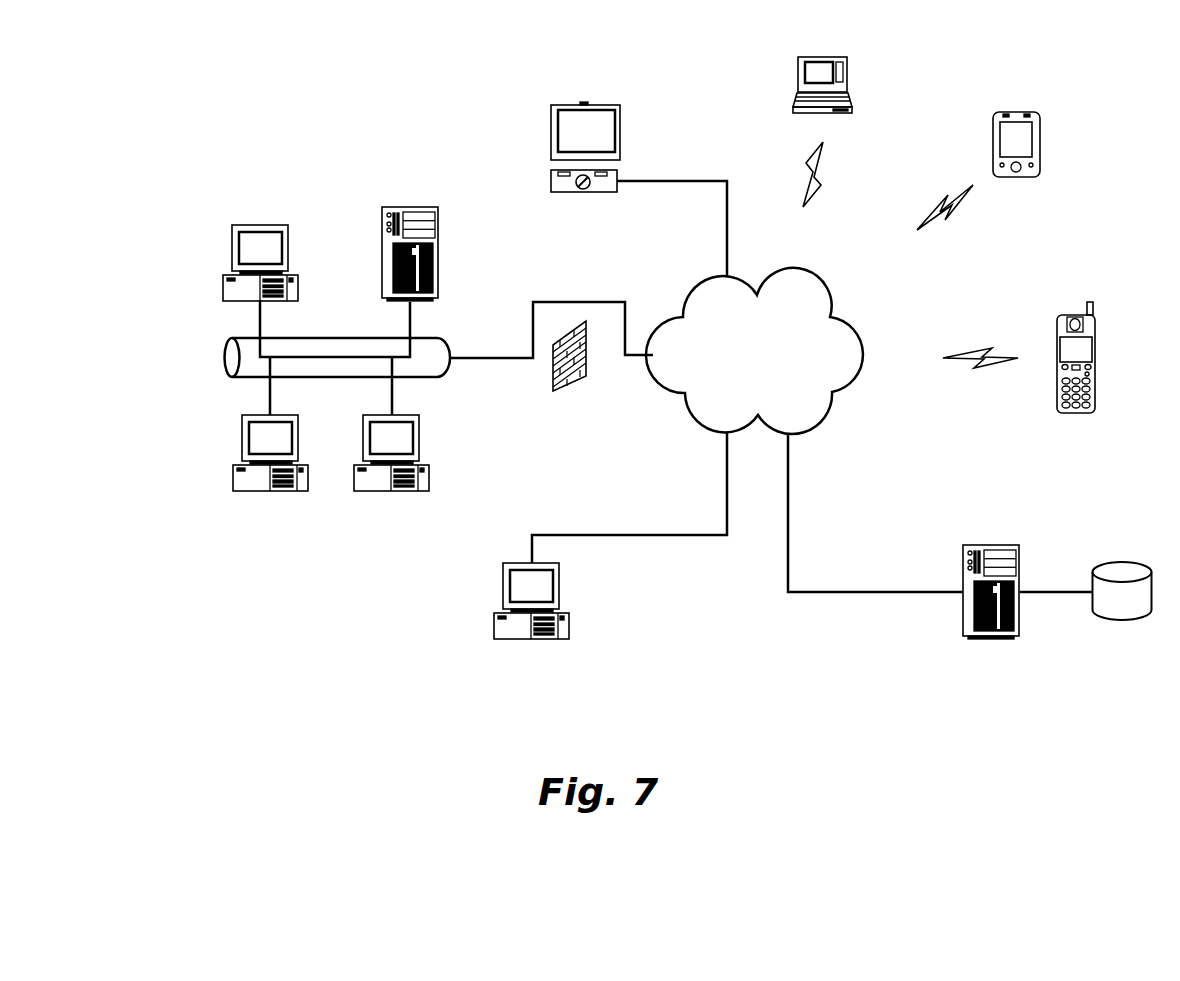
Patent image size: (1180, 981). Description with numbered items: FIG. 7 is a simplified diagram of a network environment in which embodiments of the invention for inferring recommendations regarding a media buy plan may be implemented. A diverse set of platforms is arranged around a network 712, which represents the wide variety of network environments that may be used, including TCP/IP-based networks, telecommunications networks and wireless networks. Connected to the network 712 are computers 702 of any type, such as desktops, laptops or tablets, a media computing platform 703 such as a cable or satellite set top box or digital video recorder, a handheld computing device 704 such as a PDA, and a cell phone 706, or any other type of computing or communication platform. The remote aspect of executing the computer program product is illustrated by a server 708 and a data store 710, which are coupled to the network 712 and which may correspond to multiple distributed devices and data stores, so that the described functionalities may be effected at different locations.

The computer 702 is at (235, 253).
The media computing platform 703 is at (550, 181).
The handheld computing device 704 is at (1002, 112).
The cell phone 706 is at (1062, 317).
The server 708 is at (977, 547).
The data store 710 is at (1122, 562).
The network 712 is at (695, 292).